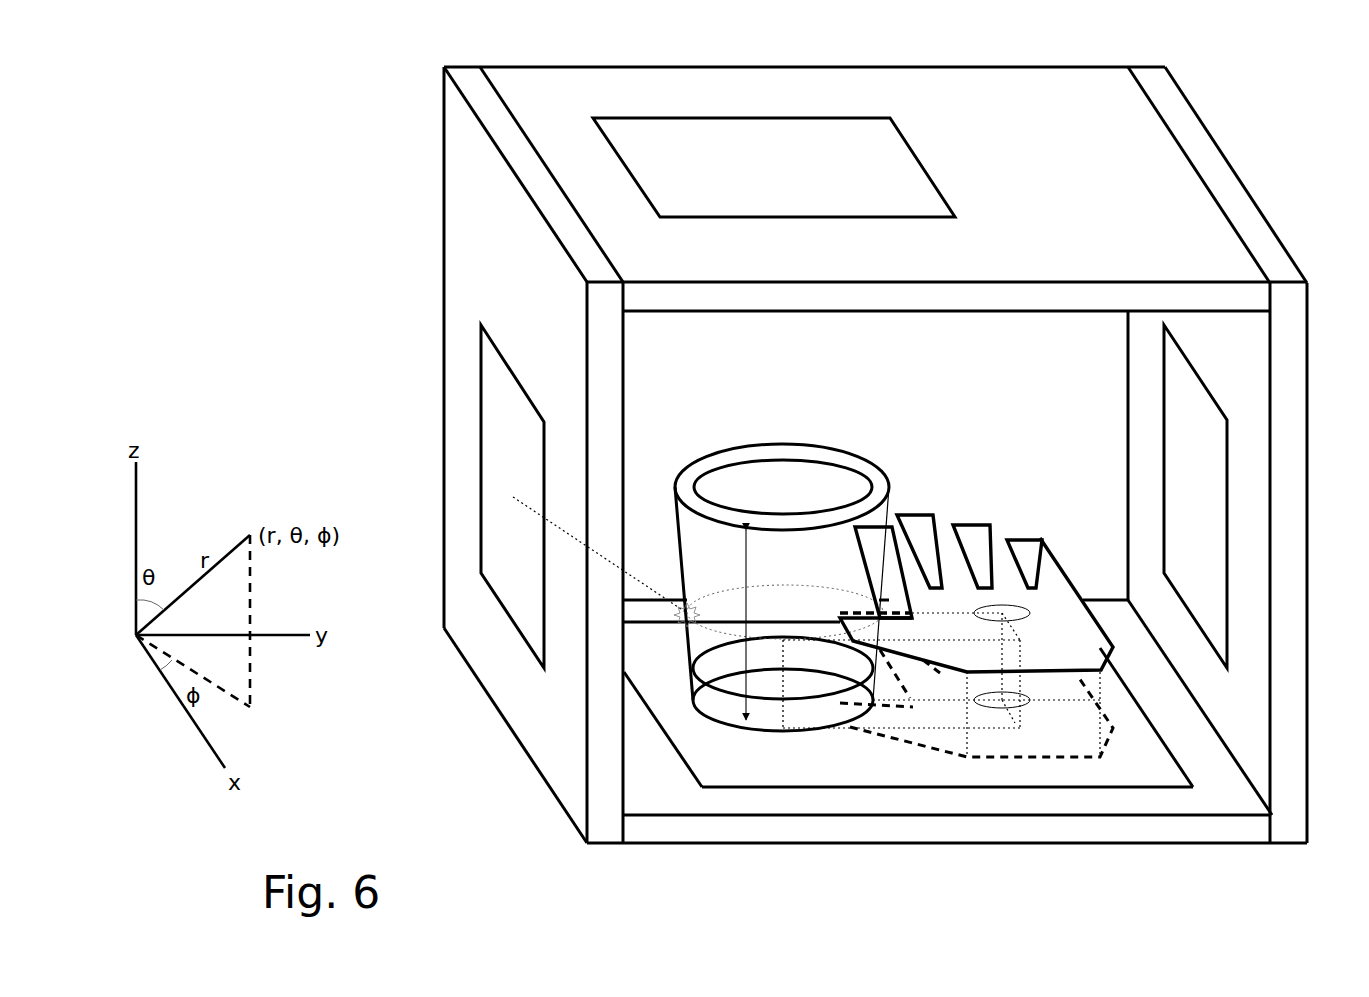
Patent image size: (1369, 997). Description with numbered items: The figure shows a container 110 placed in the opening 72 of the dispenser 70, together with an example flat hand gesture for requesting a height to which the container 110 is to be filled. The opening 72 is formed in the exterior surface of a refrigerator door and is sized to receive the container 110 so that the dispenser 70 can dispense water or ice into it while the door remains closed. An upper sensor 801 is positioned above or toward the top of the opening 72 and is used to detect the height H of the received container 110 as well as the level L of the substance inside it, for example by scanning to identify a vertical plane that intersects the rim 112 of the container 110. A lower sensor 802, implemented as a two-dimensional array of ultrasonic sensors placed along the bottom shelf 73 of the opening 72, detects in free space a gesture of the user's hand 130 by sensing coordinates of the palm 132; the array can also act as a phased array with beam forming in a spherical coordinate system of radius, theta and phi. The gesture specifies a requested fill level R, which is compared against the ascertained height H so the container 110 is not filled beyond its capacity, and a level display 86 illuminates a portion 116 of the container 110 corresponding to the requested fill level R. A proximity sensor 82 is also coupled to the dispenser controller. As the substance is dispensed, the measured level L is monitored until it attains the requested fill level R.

The dispenser 70 is at (1318, 108).
The opening 72 is at (876, 455).
The shelf 73 is at (1200, 707).
The upper sensor 801 is at (774, 167).
The lower sensor 802 is at (908, 704).
The proximity sensor 82 is at (1195, 496).
The level display 86 is at (512, 496).
The container 110 is at (713, 435).
The rim 112 is at (850, 463).
The illuminated portion 116 is at (683, 590).
The user's hand 130 is at (1043, 473).
The palm 132 is at (1038, 608).
The height of the container H is at (755, 625).
The requested fill level R is at (722, 637).
The level of the substance L is at (722, 688).